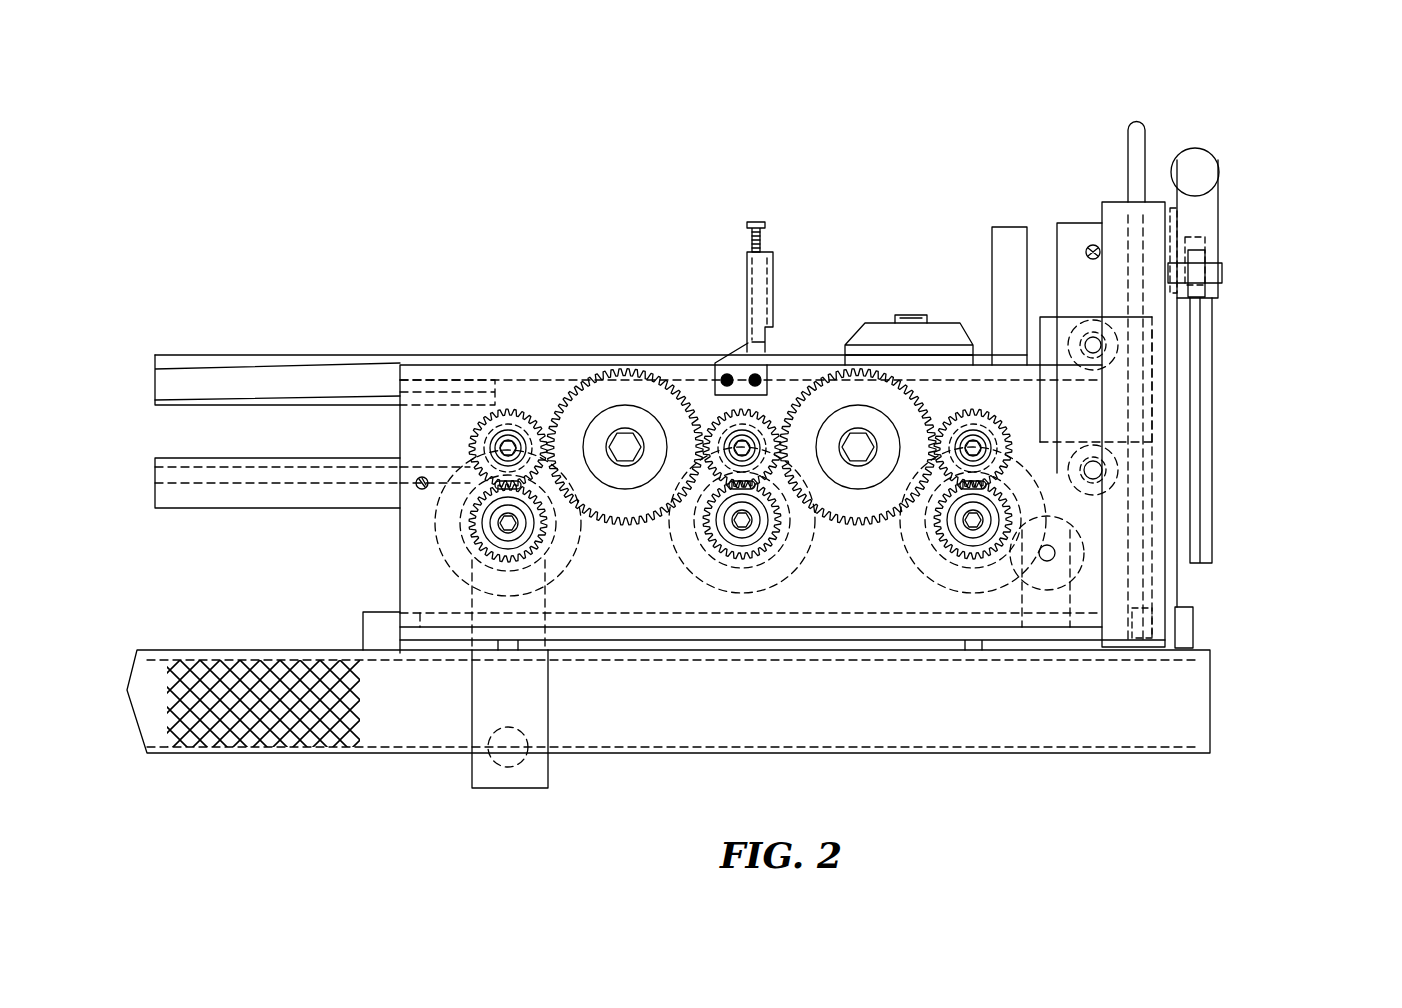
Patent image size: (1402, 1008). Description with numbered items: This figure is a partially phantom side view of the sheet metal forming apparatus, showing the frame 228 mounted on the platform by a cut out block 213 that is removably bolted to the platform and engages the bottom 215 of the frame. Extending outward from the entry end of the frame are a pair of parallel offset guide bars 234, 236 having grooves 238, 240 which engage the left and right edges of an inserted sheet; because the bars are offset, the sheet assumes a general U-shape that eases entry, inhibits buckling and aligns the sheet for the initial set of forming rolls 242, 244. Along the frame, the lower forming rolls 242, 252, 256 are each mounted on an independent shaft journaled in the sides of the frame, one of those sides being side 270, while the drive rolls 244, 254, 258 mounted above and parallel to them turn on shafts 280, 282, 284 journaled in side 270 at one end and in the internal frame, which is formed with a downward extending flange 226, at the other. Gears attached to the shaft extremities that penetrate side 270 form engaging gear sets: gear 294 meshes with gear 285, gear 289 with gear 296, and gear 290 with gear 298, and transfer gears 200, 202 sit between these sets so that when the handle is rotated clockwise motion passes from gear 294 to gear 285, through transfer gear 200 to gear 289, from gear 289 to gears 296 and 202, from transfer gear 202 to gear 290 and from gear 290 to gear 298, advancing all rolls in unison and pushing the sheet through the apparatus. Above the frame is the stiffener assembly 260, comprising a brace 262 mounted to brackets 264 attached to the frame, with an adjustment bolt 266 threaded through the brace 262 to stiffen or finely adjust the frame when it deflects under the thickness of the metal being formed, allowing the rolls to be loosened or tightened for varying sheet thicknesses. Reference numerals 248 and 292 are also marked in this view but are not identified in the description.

The transfer gear 200 is at (605, 385).
The transfer gear 202 is at (935, 405).
The cut out block 213 is at (370, 626).
The bottom 215 is at (450, 632).
The downward extending flange 226 is at (1110, 487).
The frame 228 is at (1070, 243).
The offset guide bar 234 is at (228, 362).
The offset guide bar 236 is at (247, 497).
The groove 238 is at (182, 390).
The groove 240 is at (182, 476).
The forming roll 242 is at (552, 572).
The drive roll 244 is at (465, 520).
The clamp 248 is at (887, 330).
The forming roll 252 is at (778, 570).
The drive roll 254 is at (720, 565).
The forming roll 256 is at (962, 580).
The drive roll 258 is at (958, 570).
The stiffener assembly 260 is at (790, 270).
The brace 262 is at (1180, 557).
The brackets 264 is at (740, 340).
The adjustment bolt 266 is at (760, 222).
The side 270 is at (598, 568).
The shaft 280 is at (515, 435).
The shaft 282 is at (750, 440).
The shaft 284 is at (966, 420).
The gear 285 is at (505, 410).
The gear 289 is at (738, 440).
The gear 290 is at (992, 410).
The lower gear 292 is at (500, 530).
The gear 294 is at (500, 540).
The gear 296 is at (772, 535).
The gear 298 is at (940, 535).